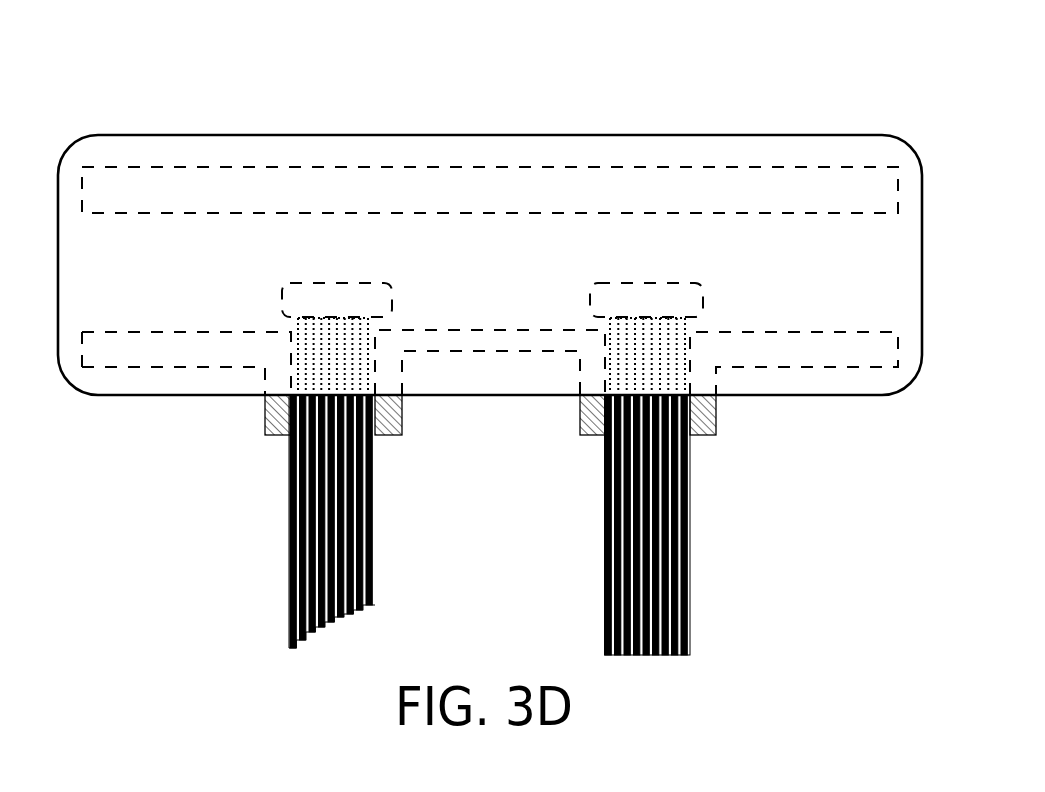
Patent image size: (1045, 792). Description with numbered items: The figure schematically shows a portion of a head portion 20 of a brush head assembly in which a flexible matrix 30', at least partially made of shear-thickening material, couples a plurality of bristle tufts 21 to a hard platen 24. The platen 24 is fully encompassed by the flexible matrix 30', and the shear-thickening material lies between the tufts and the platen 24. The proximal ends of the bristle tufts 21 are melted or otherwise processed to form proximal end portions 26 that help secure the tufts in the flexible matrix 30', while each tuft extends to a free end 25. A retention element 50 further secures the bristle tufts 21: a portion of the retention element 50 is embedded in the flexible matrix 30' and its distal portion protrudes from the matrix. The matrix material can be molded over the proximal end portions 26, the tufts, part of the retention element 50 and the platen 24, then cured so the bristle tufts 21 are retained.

The head portion 20 is at (490, 347).
The flexible matrix 30' is at (490, 231).
The hard platen 24 is at (742, 188).
The proximal end portions 26 is at (281, 301).
The retention element 50 is at (273, 415).
The bristle tufts 21 is at (486, 486).
The free end 25 is at (690, 633).